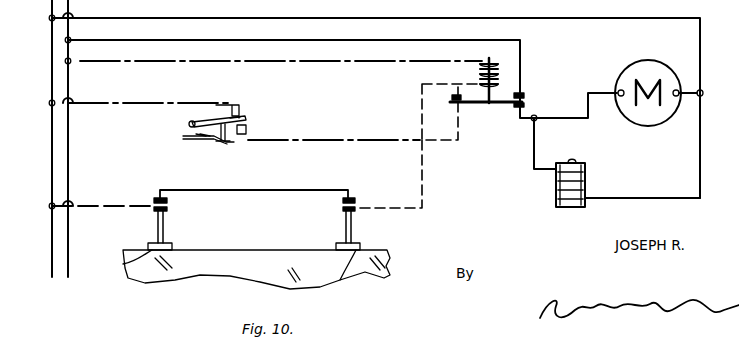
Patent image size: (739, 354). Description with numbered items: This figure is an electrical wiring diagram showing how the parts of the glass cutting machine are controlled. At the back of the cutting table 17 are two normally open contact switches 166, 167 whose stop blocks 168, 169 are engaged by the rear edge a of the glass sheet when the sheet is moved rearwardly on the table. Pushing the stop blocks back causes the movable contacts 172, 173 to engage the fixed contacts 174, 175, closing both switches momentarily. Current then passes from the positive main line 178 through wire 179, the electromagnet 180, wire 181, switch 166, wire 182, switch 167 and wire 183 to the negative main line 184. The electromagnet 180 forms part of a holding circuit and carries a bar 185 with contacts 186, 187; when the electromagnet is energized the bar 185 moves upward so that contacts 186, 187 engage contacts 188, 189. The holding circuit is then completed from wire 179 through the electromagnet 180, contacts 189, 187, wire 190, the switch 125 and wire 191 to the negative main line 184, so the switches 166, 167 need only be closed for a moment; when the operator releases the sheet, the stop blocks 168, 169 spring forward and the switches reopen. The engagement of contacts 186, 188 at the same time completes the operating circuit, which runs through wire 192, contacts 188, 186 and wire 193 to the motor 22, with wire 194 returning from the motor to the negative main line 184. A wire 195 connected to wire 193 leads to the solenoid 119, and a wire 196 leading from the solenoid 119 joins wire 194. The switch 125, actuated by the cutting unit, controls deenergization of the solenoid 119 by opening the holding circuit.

The cutting table 17 is at (190, 278).
The motor 22 is at (652, 64).
The solenoid 119 is at (556, 199).
The switch 125 is at (216, 102).
The contact switch 166 is at (362, 231).
The contact switch 167 is at (172, 226).
The stop block 168 is at (362, 275).
The stop block 169 is at (123, 266).
The movable contact 172 is at (342, 212).
The movable contact 173 is at (145, 217).
The fixed contact 174 is at (356, 200).
The fixed contact 175 is at (154, 196).
The positive main line 178 is at (70, 123).
The wire 179 is at (328, 61).
The electromagnet 180 is at (492, 84).
The wire 181 is at (424, 164).
The wire 182 is at (292, 190).
The wire 183 is at (104, 198).
The negative main line 184 is at (50, 277).
The bar 185 is at (474, 110).
The contact 186 is at (523, 104).
The contact 187 is at (451, 112).
The contact 188 is at (522, 94).
The contact 189 is at (456, 96).
The wire 190 is at (344, 140).
The wire 191 is at (168, 100).
The wire 192 is at (420, 40).
The wire 193 is at (597, 118).
The wire 194 is at (636, 18).
The wire 195 is at (534, 156).
The wire 196 is at (660, 200).
The rear edge a is at (264, 253).